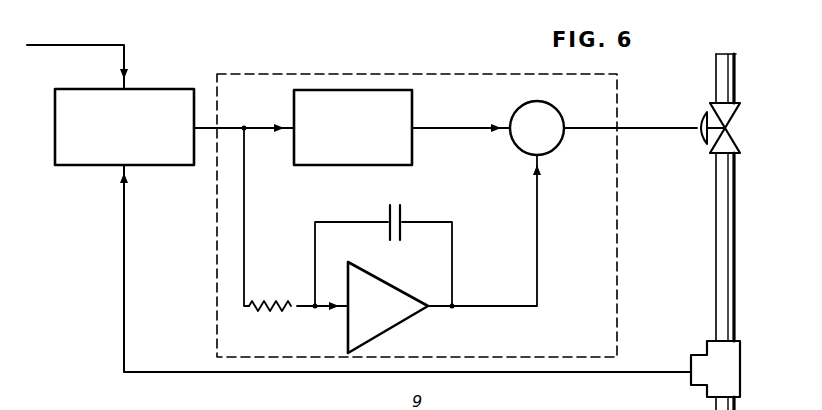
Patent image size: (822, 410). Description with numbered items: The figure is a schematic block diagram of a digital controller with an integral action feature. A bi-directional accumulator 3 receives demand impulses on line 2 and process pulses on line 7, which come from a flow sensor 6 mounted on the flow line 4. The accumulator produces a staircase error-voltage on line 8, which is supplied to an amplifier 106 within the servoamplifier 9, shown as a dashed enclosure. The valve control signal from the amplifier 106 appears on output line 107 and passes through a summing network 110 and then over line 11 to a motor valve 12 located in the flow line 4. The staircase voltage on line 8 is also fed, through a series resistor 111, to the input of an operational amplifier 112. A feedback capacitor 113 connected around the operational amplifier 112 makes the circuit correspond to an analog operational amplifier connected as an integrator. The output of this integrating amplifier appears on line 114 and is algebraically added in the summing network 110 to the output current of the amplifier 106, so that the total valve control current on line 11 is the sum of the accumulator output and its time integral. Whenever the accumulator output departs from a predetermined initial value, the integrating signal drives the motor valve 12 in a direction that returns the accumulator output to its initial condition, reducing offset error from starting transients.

The line 2 is at (98, 45).
The bi-directional accumulator 3 is at (153, 100).
The flow line 4 is at (718, 250).
The flow sensor 6 is at (710, 365).
The line 7 is at (124, 270).
The line 8 is at (205, 127).
The servoamplifier 9 is at (272, 74).
The line 11 is at (672, 124).
The motor valve 12 is at (738, 118).
The amplifier 106 is at (365, 98).
The output line 107 is at (440, 127).
The summing network 110 is at (548, 140).
The series resistor 111 is at (280, 310).
The operational amplifier 112 is at (395, 315).
The feedback capacitor 113 is at (398, 205).
The line 114 is at (538, 253).